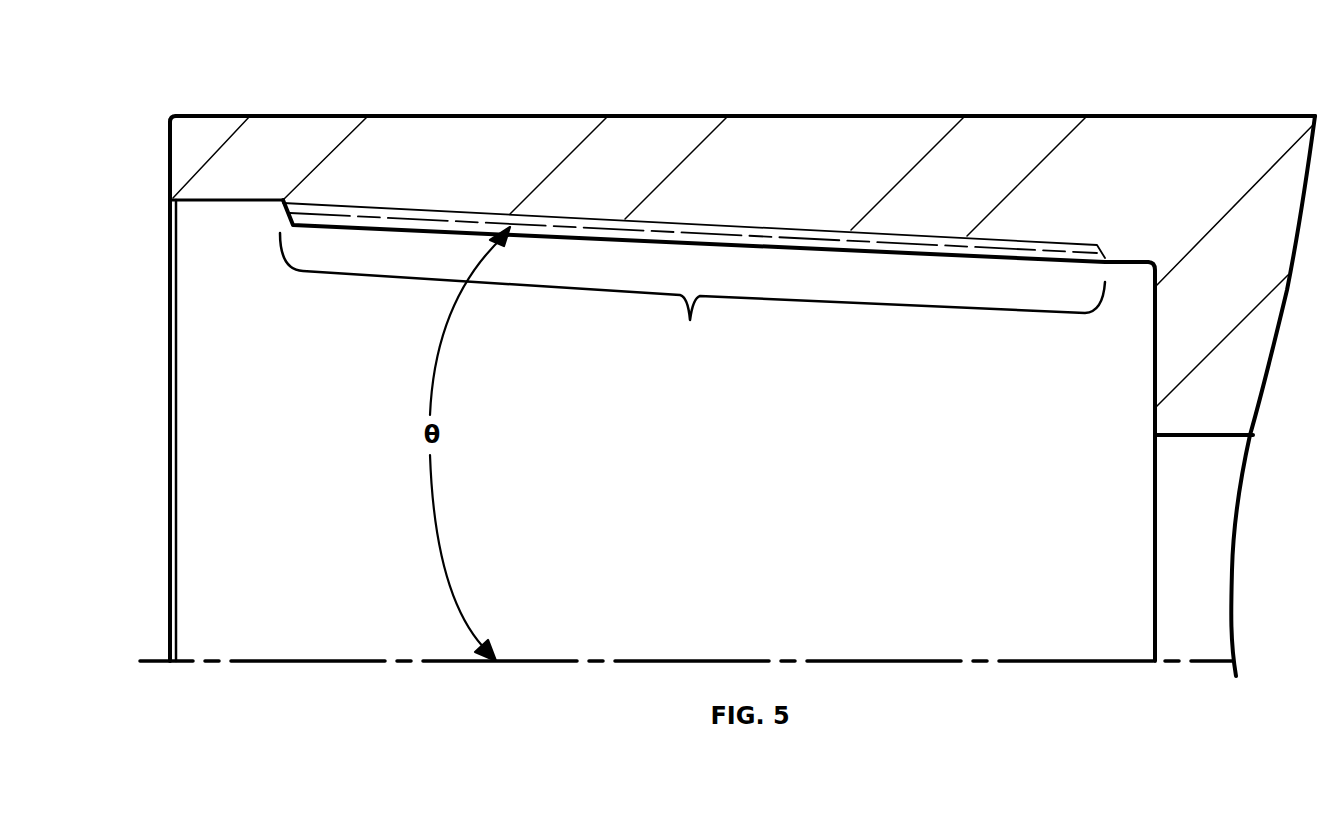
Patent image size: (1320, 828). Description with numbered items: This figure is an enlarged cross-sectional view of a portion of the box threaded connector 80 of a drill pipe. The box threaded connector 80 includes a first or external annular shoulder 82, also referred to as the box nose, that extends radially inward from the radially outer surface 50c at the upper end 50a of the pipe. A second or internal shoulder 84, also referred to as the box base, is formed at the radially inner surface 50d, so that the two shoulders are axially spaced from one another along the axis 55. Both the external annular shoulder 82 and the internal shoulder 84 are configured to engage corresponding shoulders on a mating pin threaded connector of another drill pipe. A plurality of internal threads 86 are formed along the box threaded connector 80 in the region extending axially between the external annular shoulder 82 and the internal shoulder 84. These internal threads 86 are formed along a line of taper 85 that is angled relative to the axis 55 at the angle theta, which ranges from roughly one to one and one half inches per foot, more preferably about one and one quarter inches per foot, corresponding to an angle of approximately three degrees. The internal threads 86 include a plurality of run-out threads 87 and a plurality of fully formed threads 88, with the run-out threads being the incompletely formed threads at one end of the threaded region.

The box threaded connector 80 is at (569, 46).
The external annular shoulder 82 is at (166, 137).
The internal shoulder 84 is at (1155, 317).
The line of taper 85 is at (710, 235).
The internal threads 86 is at (692, 298).
The run-out threads 87 is at (1037, 236).
The fully formed threads 88 is at (649, 208).
The upper end 50a is at (160, 356).
The radially outer surface 50c is at (1113, 116).
The radially inner surface 50d is at (1160, 437).
The axis 55 is at (339, 661).